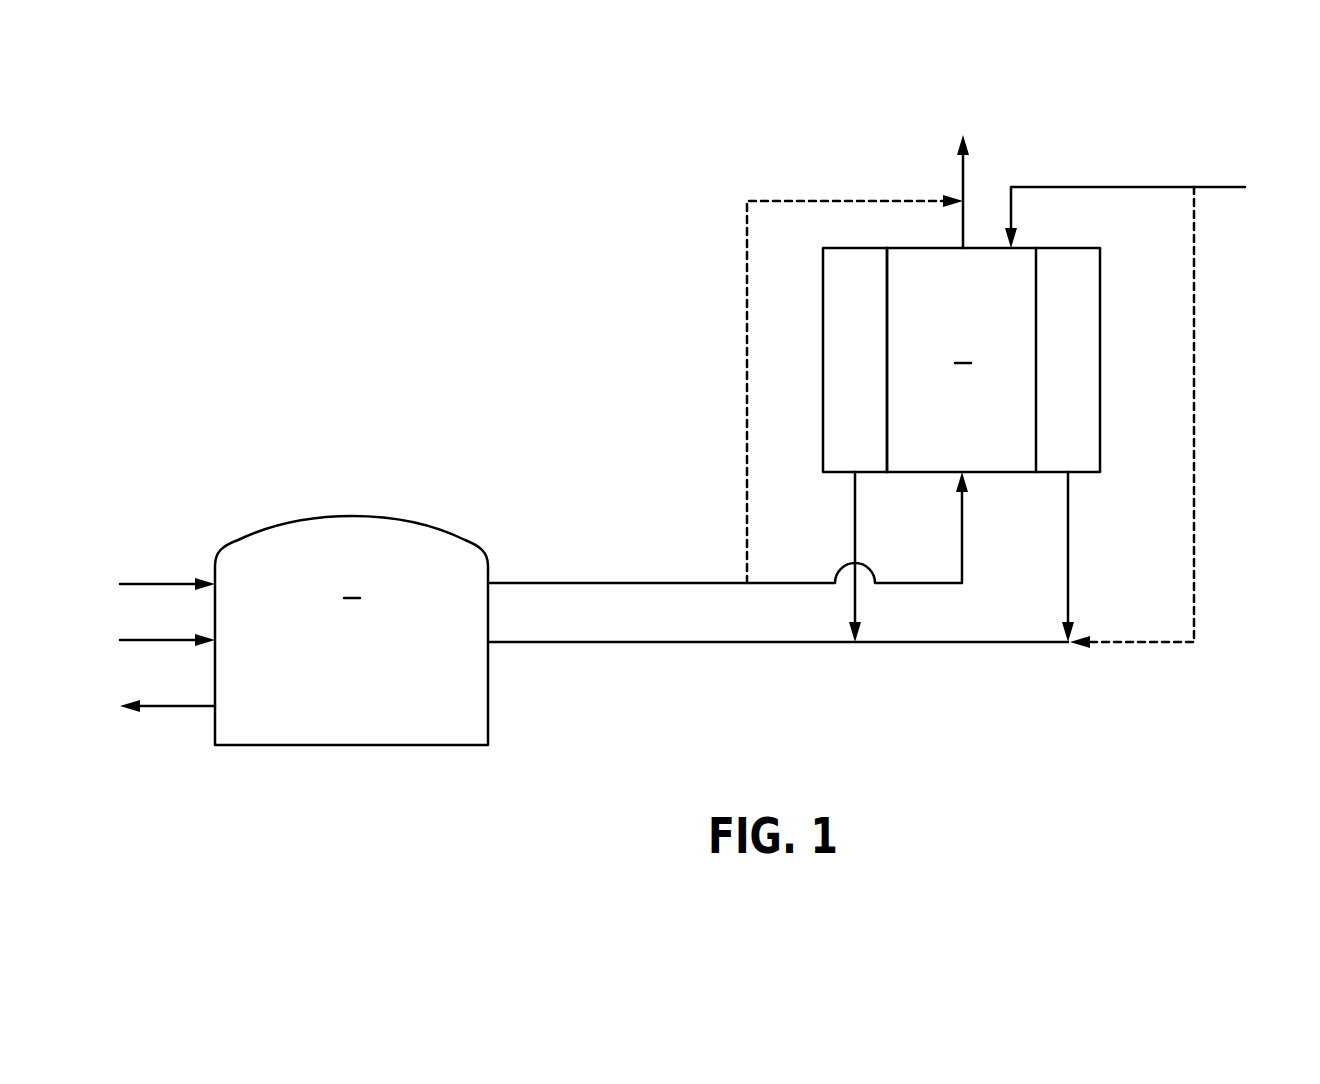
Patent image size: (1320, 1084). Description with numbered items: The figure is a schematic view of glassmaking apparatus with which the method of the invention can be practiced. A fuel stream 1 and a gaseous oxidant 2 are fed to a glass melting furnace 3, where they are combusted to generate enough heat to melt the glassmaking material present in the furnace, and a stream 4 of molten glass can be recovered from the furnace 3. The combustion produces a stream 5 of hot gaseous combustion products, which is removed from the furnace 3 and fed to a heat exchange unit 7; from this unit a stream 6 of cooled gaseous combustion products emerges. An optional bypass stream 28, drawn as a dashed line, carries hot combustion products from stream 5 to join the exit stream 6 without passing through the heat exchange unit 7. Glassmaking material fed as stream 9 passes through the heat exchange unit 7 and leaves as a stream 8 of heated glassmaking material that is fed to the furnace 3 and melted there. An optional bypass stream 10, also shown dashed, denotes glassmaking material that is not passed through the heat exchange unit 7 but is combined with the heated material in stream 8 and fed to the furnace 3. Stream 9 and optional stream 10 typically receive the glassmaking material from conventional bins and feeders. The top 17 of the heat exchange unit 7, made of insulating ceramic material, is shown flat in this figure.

The fuel stream 1 is at (160, 583).
The gaseous oxidant 2 is at (163, 641).
The glass melting furnace 3 is at (351, 630).
The stream of molten glass 4 is at (175, 707).
The stream of hot gaseous combustion products 5 is at (656, 583).
The stream of cooled gaseous combustion products 6 is at (965, 185).
The heat exchange unit 7 is at (961, 360).
The stream of heated glassmaking material 8 is at (856, 518).
The stream of glassmaking material 9 is at (1098, 185).
The optional bypass stream 10 is at (1193, 348).
The top 17 is at (903, 249).
The optional bypass stream 28 is at (745, 297).